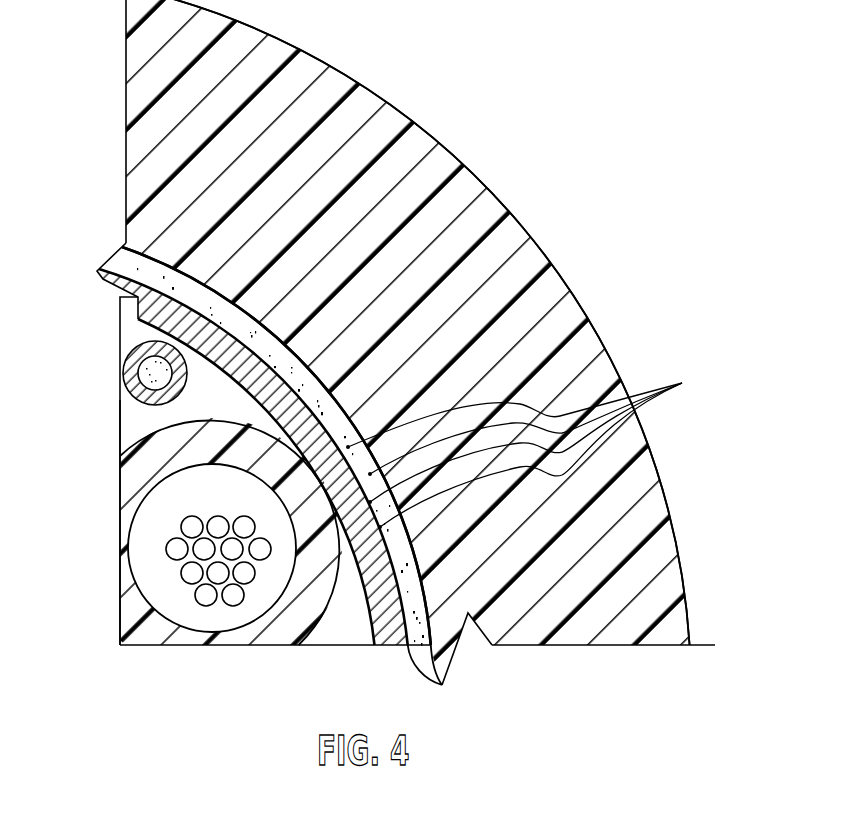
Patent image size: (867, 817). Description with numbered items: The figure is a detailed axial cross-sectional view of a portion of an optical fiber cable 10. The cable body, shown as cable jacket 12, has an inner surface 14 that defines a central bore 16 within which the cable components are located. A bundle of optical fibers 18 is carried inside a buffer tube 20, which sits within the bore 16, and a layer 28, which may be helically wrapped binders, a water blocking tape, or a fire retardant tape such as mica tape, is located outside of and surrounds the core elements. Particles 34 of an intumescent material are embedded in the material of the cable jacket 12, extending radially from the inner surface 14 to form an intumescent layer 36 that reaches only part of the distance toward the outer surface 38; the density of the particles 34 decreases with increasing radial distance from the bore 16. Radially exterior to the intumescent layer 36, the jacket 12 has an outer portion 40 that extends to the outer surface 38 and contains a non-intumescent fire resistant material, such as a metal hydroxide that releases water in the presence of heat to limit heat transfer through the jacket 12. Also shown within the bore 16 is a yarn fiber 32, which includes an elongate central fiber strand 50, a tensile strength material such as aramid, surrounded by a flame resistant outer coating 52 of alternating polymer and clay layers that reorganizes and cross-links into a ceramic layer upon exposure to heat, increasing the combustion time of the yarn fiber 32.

The cable 10 is at (740, 270).
The cable jacket 12 is at (658, 580).
The inner surface 14 is at (403, 627).
The central bore 16 is at (130, 423).
The optical fibers 18 is at (206, 597).
The buffer tubes 20 is at (287, 627).
The layer 28 is at (152, 302).
The yarn fibers 32 is at (122, 393).
The particles 34 is at (530, 448).
The intumescent layer 36 is at (438, 660).
The outer surface 38 is at (673, 530).
The outer portion 40 is at (497, 252).
The fiber strand 50 is at (157, 370).
The flame resistant outer coating 52 is at (137, 366).